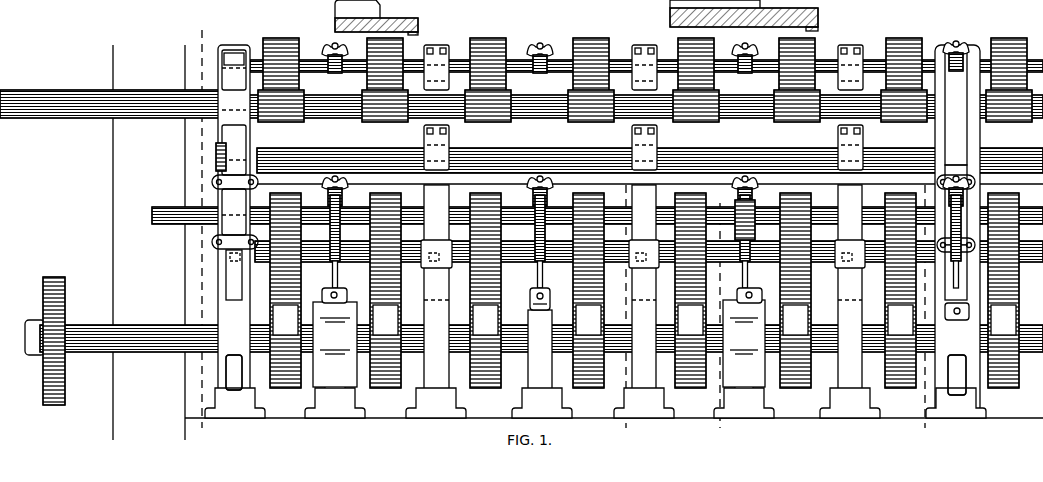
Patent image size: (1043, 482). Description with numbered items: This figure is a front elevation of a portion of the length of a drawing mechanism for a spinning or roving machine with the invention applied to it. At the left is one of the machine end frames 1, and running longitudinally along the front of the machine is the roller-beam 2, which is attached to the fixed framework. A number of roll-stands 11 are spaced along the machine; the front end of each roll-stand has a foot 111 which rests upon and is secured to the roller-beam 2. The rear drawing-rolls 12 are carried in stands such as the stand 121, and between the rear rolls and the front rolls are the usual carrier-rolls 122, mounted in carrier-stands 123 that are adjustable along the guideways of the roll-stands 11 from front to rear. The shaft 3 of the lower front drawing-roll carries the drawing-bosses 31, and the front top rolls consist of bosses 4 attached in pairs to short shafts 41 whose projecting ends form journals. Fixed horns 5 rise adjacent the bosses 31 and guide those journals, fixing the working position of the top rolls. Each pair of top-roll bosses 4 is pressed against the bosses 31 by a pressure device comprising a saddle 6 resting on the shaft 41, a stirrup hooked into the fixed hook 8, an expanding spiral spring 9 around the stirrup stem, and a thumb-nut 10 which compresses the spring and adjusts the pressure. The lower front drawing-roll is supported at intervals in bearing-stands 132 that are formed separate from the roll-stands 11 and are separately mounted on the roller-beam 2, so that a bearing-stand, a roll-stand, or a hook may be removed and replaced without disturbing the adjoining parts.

The machine end frame 1 is at (110, 187).
The roller-beam 2 is at (233, 63).
The shaft of the lower front drawing-roll 3 is at (155, 333).
The bosses of the front top rolls 4 is at (385, 197).
The horn 5 is at (542, 314).
The saddle 6 is at (332, 243).
The hook 8 is at (347, 296).
The expanding spiral spring 9 is at (752, 200).
The thumb-nut 10 is at (553, 186).
The roll-stand 11 is at (213, 135).
The rear drawing-roll 12 is at (585, 40).
The drawing-bosses of the lower front drawing-roll 31 is at (644, 290).
The short shaft of the front top rolls 41 is at (724, 240).
The foot of the roll-stand 111 is at (215, 390).
The stand for the rear drawing-rolls 121 is at (203, 42).
The carrier-roll 122 is at (365, 150).
The carrier-stand 123 is at (232, 158).
The bearing-stand 132 is at (336, 405).